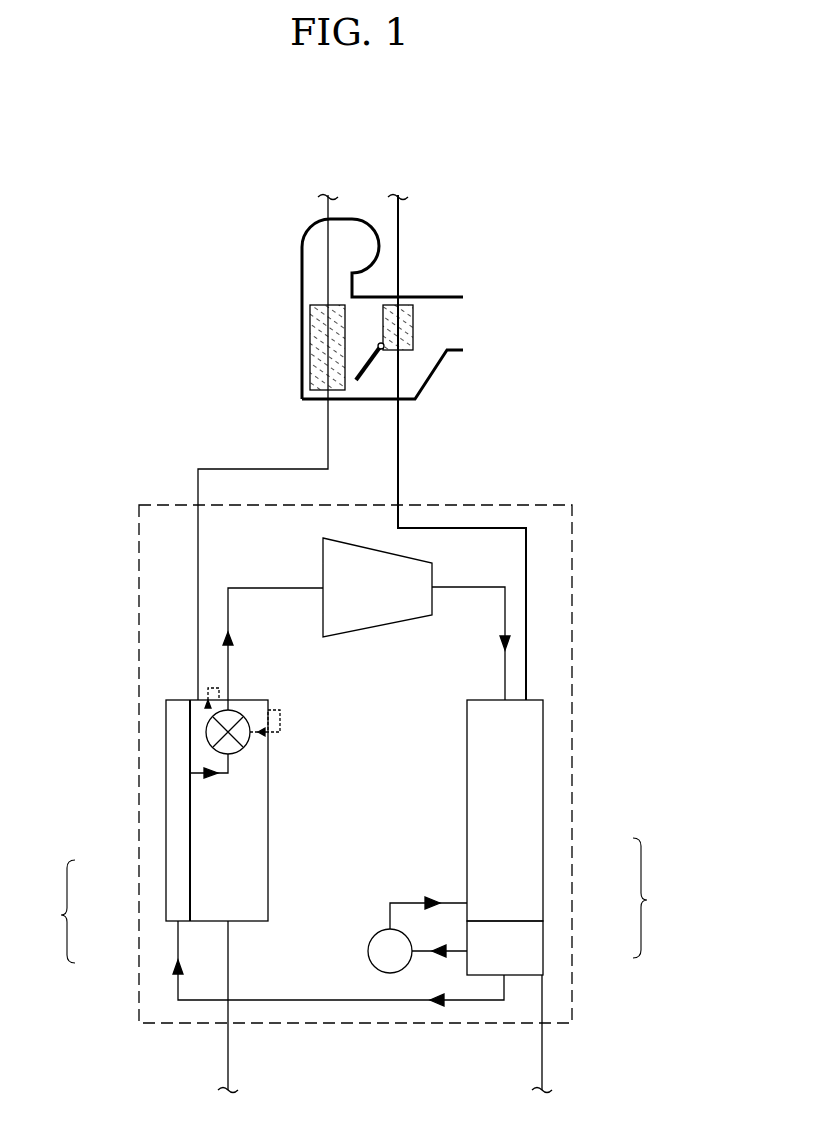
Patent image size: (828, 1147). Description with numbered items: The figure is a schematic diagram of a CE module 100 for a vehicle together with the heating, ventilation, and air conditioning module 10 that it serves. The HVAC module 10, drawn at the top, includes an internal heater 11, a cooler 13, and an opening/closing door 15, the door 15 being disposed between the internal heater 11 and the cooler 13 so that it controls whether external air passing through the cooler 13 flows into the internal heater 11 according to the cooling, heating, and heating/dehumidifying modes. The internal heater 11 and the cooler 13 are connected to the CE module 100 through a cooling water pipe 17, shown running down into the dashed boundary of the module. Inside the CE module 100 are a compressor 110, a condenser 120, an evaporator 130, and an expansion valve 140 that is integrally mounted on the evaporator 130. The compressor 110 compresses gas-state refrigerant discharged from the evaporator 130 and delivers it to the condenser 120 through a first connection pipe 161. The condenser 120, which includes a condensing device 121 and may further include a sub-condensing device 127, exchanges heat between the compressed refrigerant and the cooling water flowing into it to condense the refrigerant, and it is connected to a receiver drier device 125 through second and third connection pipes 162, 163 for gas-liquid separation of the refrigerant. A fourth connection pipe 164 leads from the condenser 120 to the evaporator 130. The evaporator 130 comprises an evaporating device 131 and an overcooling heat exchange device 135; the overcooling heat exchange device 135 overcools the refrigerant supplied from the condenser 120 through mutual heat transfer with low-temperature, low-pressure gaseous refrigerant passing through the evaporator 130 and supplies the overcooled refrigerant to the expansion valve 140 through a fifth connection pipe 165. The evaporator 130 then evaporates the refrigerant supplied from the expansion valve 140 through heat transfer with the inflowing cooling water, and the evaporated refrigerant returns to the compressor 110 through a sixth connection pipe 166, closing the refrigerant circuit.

The heating, ventilation, and air conditioning (HVAC) module 10 is at (452, 287).
The internal heater 11 is at (447, 352).
The cooler 13 is at (310, 335).
The opening/closing door 15 is at (375, 365).
The cooling water pipe 17 is at (232, 469).
The CE module 100 is at (139, 503).
The compressor 110 is at (323, 561).
The condenser 120 is at (576, 837).
The condensing device 121 is at (543, 849).
The receiver drier device 125 is at (372, 966).
The sub-condensing device 127 is at (543, 947).
The evaporator 130 is at (148, 832).
The evaporating device 131 is at (212, 921).
The overcooling heat exchange device 135 is at (166, 870).
The expansion valve 140 is at (237, 716).
The first connection pipe 161 is at (468, 590).
The second connection pipe 162 is at (403, 903).
The third connection pipe 163 is at (420, 953).
The fourth connection pipe 164 is at (310, 1000).
The fifth connection pipe 165 is at (222, 773).
The sixth connection pipe 166 is at (230, 646).